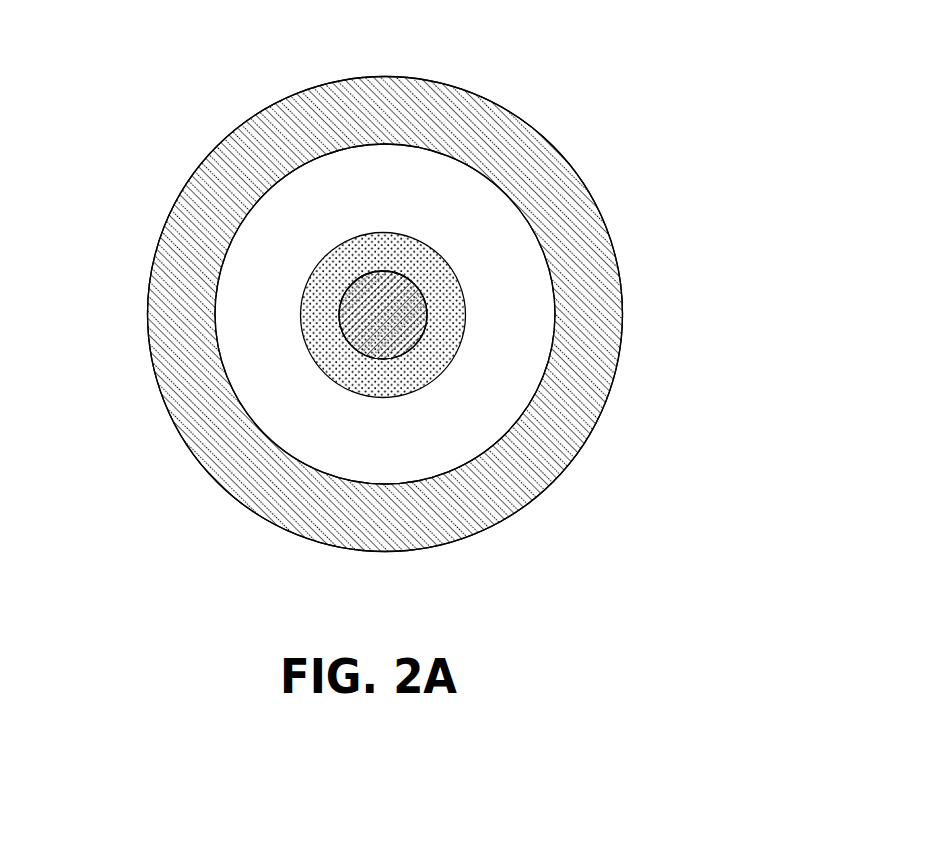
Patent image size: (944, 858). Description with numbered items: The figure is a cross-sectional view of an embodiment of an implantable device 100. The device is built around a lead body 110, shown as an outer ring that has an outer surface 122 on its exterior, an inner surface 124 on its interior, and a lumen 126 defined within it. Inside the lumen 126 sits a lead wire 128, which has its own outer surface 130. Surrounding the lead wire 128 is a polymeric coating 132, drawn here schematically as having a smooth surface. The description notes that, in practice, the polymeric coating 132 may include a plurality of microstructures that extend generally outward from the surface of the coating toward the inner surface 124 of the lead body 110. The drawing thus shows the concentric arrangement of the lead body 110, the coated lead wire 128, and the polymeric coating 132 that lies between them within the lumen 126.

The implantable device 100 is at (650, 93).
The lead body 110 is at (593, 253).
The outer surface 122 is at (228, 497).
The inner surface 124 is at (233, 390).
The lumen 126 is at (470, 430).
The lead wire 128 is at (387, 320).
The outer surface 130 is at (343, 327).
The polymeric coating 132 is at (335, 292).